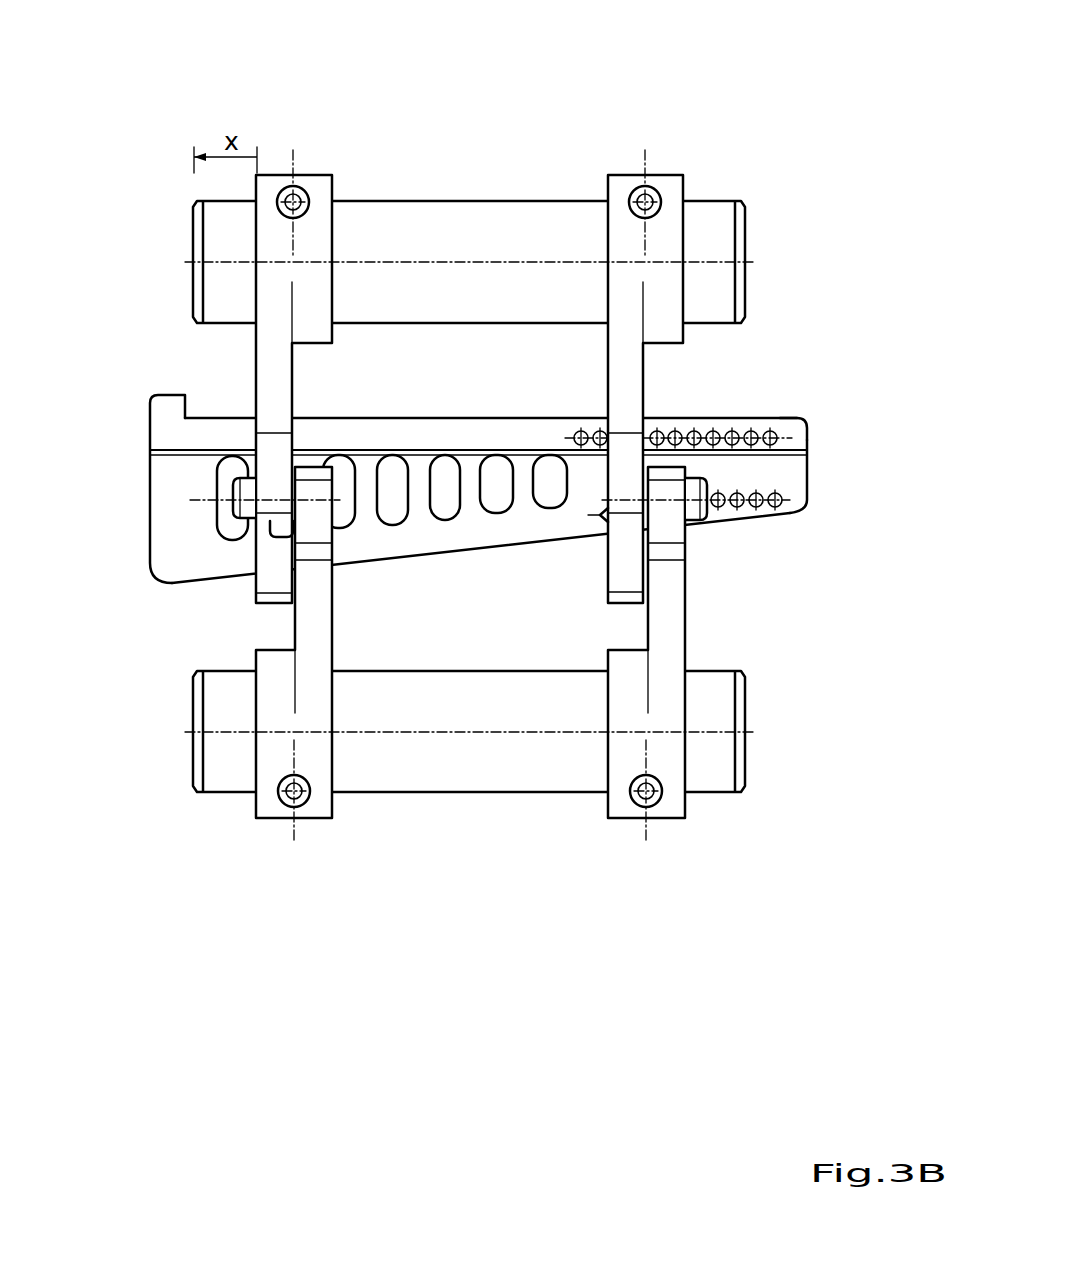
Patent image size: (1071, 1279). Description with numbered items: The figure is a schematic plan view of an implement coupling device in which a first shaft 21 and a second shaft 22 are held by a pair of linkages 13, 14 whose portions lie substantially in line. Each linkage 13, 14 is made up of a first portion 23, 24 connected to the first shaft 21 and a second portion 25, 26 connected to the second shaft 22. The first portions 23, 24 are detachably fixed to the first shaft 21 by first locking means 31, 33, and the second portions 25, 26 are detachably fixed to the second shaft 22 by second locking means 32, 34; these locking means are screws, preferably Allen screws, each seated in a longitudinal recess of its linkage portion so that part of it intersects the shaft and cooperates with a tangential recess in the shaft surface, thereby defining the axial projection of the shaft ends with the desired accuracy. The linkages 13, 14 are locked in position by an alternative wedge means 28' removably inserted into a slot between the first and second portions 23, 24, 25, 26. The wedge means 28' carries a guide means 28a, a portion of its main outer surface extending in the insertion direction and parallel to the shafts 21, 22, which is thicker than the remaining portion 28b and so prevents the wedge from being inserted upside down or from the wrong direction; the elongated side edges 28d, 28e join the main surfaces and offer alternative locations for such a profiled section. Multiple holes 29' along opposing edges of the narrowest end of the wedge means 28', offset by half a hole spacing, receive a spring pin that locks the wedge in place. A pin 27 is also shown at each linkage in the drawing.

The linkage 13 is at (132, 457).
The linkage 14 is at (800, 663).
The first shaft 21 is at (213, 252).
The second shaft 22 is at (212, 762).
The first portion 23 is at (256, 368).
The first portion 24 is at (630, 384).
The second portion 25 is at (307, 620).
The second portion 26 is at (670, 613).
The pin 27 is at (235, 505).
The alternative wedge means 28' is at (532, 489).
The guide means 28a is at (805, 416).
The remaining portion 28b is at (792, 485).
The elongated side edge 28d is at (430, 556).
The elongated side edge 28e is at (470, 418).
The holes 29' is at (694, 425).
The first locking means 31 is at (290, 173).
The second locking means 32 is at (284, 807).
The first locking means 33 is at (657, 186).
The second locking means 34 is at (655, 810).